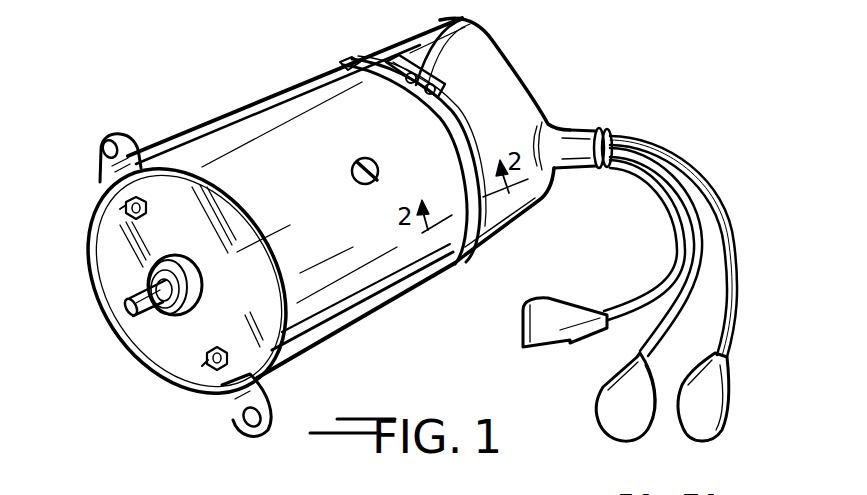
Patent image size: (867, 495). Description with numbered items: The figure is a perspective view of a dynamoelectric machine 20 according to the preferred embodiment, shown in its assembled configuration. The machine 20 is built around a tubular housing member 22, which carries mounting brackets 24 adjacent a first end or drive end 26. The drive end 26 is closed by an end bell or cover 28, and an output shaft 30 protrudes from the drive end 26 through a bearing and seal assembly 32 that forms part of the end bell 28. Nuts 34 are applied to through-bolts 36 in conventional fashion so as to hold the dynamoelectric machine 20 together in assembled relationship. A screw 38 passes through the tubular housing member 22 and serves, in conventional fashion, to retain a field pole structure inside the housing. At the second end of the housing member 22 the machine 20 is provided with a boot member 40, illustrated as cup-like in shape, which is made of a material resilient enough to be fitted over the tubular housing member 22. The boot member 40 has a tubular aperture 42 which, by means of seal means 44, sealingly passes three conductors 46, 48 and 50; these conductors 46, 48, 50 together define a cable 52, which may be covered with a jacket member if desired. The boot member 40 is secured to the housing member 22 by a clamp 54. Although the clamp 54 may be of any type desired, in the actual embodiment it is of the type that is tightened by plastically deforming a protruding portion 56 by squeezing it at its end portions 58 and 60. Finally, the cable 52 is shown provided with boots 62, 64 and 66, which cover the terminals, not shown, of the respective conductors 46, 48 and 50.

The dynamoelectric machine 20 is at (596, 72).
The tubular housing member 22 is at (233, 115).
The mounting brackets 24 is at (128, 134).
The drive end 26 is at (86, 302).
The end bell 28 is at (143, 353).
The output shaft 30 is at (127, 306).
The bearing and seal assembly 32 is at (175, 325).
The nuts 34 is at (127, 203).
The through-bolts 36 is at (128, 207).
The screw 38 is at (353, 187).
The boot member 40 is at (488, 67).
The tubular aperture 42 is at (580, 127).
The seal means 44 is at (612, 135).
The conductor 46 is at (683, 172).
The conductor 48 is at (690, 210).
The conductor 50 is at (680, 228).
The cable 52 is at (724, 187).
The clamp 54 is at (352, 62).
The protruding portion 56 is at (463, 19).
The end portion 58 is at (405, 82).
The end portion 60 is at (438, 88).
The boot 62 is at (723, 405).
The boot 64 is at (560, 300).
The boot 66 is at (603, 390).